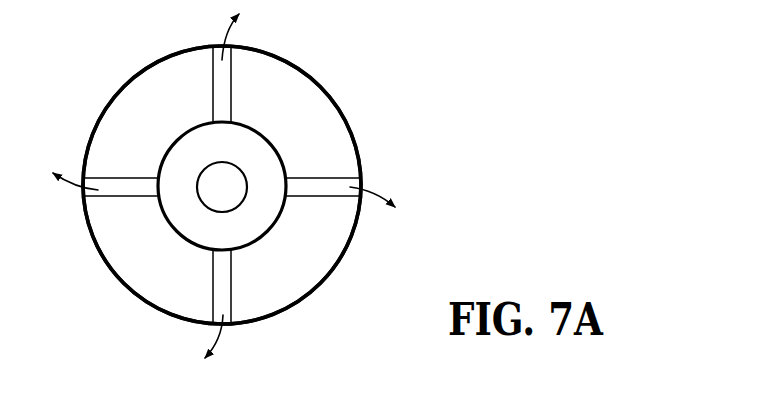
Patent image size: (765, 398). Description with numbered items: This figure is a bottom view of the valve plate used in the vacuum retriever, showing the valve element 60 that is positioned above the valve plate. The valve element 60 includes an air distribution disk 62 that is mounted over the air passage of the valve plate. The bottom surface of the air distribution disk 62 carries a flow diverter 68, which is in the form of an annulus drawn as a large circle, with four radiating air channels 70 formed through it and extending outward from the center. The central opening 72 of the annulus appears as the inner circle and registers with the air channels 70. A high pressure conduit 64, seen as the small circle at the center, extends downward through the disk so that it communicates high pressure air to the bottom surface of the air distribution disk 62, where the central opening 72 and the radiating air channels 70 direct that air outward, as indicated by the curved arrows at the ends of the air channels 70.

The valve element 60 is at (387, 106).
The air distribution disk 62 is at (335, 276).
The high pressure conduit 64 is at (216, 193).
The flow diverter 68 is at (122, 108).
The air channels 70 is at (220, 82).
The central opening 72 is at (240, 143).